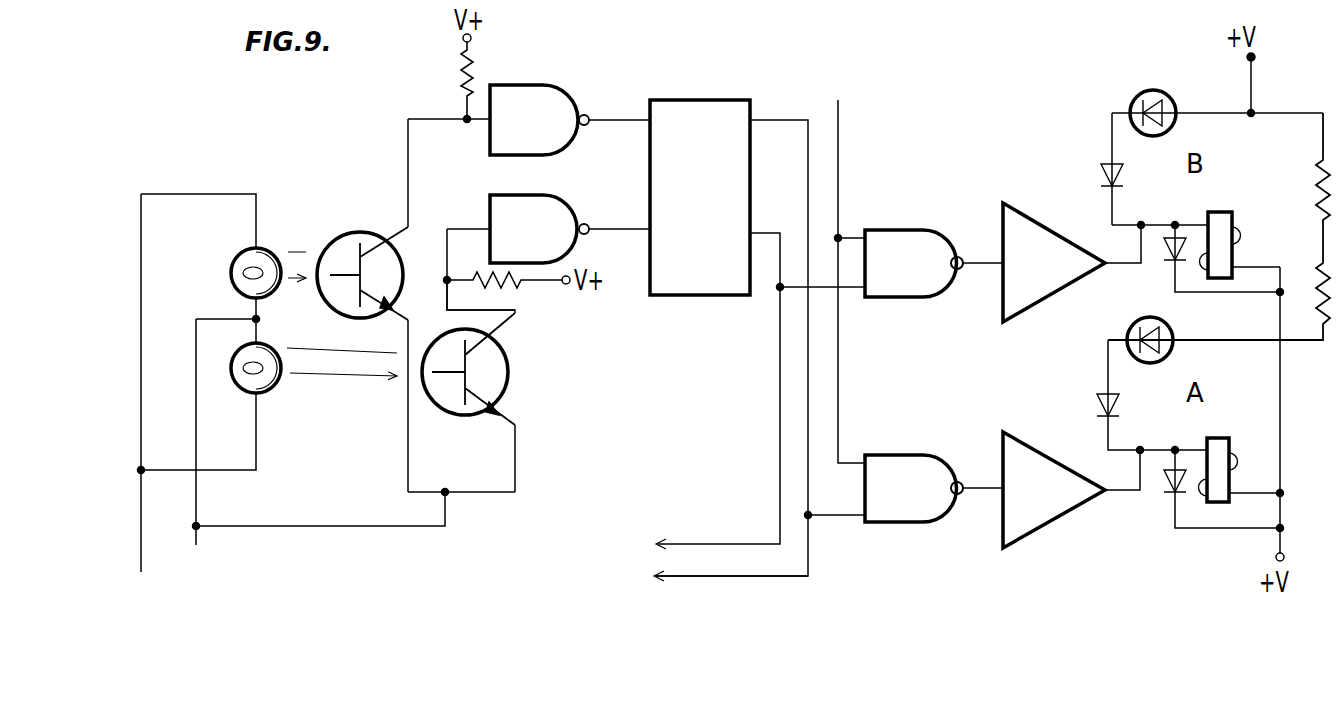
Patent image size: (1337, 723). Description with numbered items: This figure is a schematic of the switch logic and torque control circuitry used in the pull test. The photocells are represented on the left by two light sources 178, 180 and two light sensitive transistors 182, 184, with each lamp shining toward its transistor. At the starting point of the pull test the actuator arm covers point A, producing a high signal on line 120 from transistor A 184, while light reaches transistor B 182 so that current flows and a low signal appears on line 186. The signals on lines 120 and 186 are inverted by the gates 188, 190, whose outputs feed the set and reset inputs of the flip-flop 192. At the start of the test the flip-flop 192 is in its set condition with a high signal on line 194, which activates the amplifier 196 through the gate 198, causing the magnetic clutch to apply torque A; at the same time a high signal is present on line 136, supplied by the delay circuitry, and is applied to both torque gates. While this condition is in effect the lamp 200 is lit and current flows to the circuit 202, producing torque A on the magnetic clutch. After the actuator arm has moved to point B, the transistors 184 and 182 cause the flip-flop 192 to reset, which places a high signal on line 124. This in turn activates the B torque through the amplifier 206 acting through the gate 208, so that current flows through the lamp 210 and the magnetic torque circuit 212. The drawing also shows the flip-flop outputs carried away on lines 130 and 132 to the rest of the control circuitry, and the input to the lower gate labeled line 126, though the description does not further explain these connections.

The line 120 is at (443, 118).
The line 124 is at (848, 292).
The line to NAND gate 126 is at (838, 518).
The output line 130 is at (742, 577).
The output line 132 is at (730, 542).
The line 136 is at (864, 85).
The light source 178 is at (272, 388).
The light source 180 is at (243, 248).
The light sensitive transistor 182 is at (495, 398).
The light sensitive transistor 184 is at (366, 231).
The line 186 is at (512, 316).
The gate 188 is at (534, 196).
The gate 190 is at (533, 86).
The flip-flop 192 is at (684, 100).
The line 194 is at (731, 329).
The amplifier 196 is at (1040, 449).
The gate 198 is at (880, 455).
The lamp 200 is at (1168, 321).
The circuit 202 is at (1215, 436).
The amplifier 206 is at (1032, 216).
The gate 208 is at (870, 229).
The lamp 210 is at (1141, 92).
The magnetic torque circuit 212 is at (1229, 210).